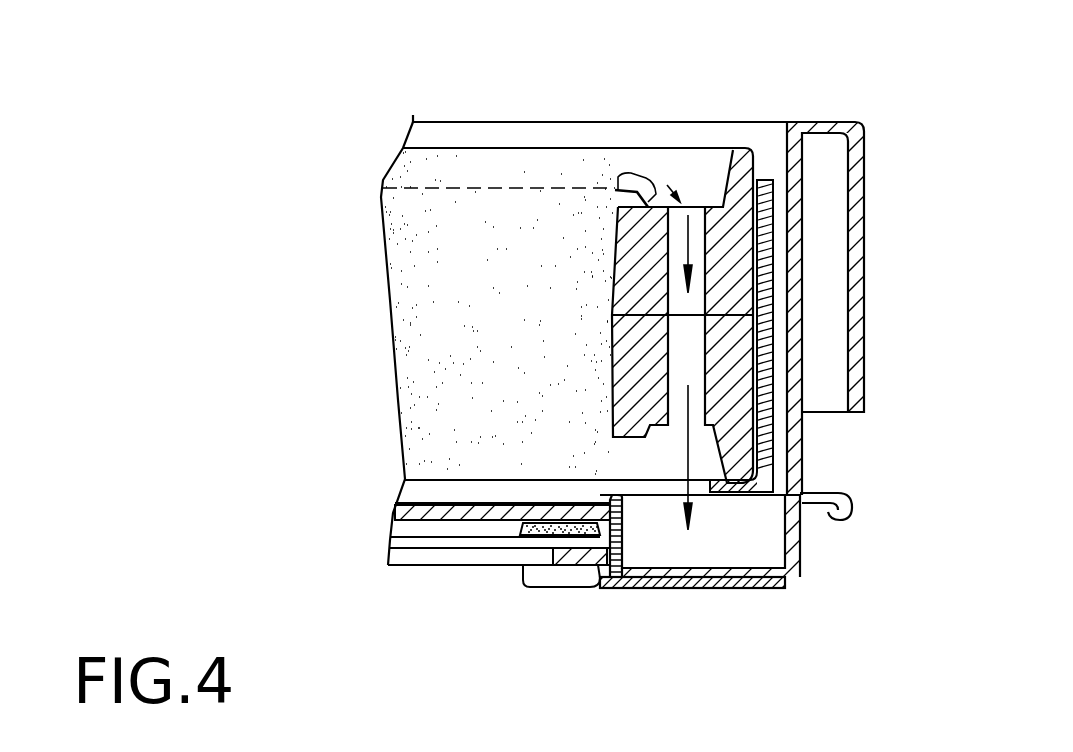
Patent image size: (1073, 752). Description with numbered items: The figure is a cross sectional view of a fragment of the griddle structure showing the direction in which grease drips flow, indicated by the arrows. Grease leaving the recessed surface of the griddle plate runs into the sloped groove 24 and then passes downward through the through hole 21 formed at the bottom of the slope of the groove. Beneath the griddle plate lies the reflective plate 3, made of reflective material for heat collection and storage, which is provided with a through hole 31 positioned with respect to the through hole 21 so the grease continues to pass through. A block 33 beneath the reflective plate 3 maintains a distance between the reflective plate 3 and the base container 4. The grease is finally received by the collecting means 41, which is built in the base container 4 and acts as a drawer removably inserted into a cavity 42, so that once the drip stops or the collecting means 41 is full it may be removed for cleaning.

The through hole 21 is at (680, 227).
The groove 24 is at (657, 205).
The base container 4 is at (895, 279).
The reflective plate 3 is at (790, 458).
The collecting means 41 is at (777, 540).
The cavity 42 is at (762, 588).
The through hole 31 is at (613, 486).
The block 33 is at (528, 527).